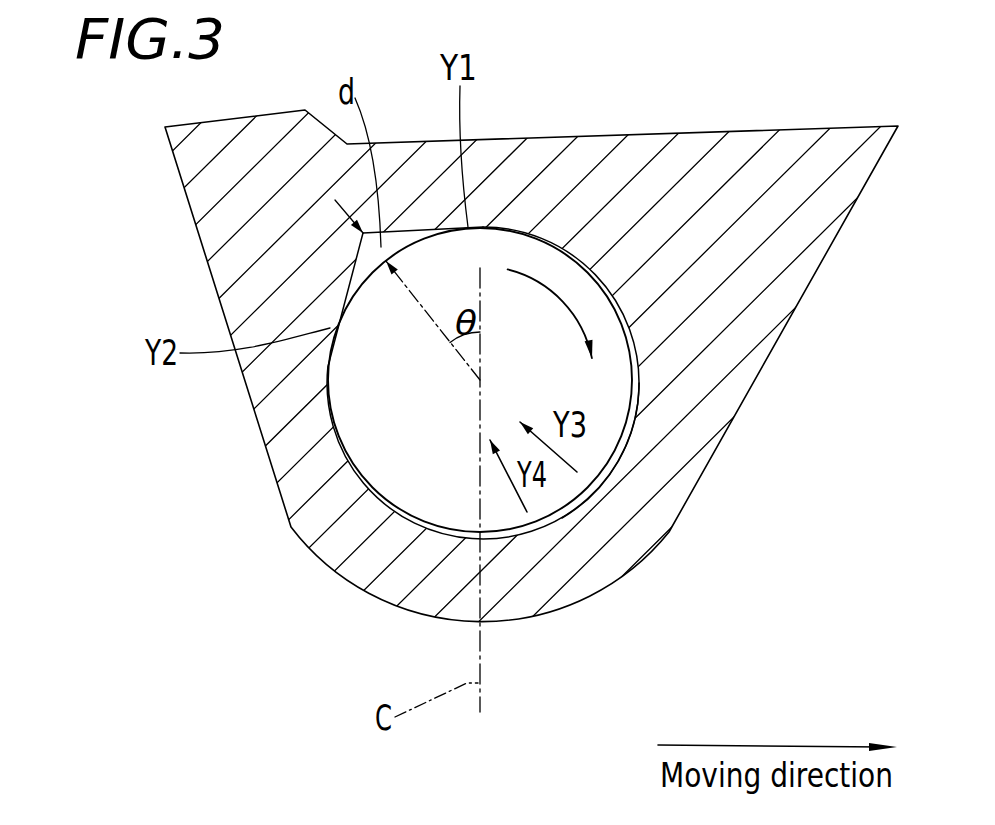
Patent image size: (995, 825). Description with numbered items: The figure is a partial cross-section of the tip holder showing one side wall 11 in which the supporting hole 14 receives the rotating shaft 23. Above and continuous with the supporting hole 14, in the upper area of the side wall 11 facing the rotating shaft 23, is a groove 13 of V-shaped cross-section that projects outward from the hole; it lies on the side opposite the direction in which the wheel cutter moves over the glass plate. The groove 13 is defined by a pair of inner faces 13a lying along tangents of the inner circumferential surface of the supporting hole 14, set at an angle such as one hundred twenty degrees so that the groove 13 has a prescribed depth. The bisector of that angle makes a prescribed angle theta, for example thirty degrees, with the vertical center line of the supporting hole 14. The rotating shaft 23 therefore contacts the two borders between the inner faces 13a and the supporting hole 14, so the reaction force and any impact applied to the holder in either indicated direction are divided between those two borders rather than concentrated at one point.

The side wall 11 is at (697, 382).
The groove 13 is at (350, 272).
The inner faces 13a is at (412, 230).
The supporting hole 14 is at (590, 500).
The rotating shaft 23 is at (393, 467).